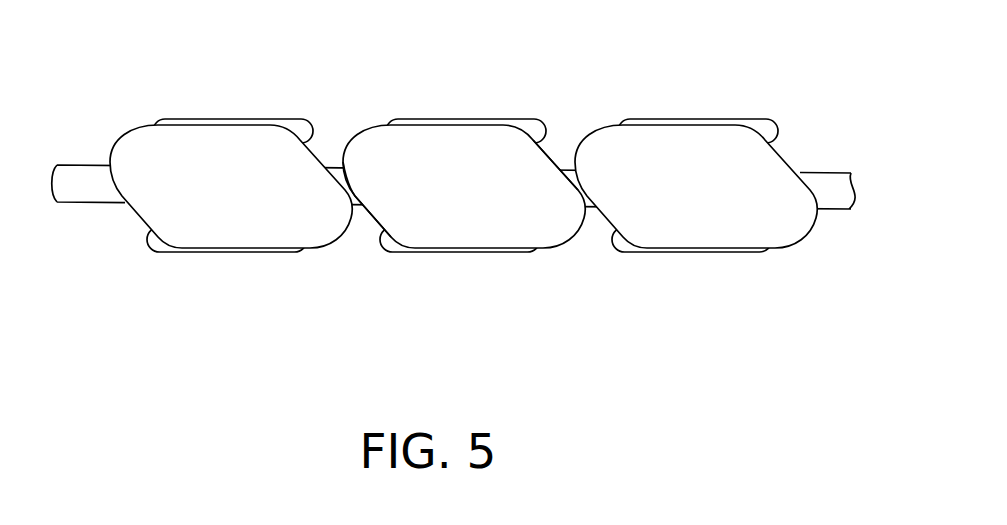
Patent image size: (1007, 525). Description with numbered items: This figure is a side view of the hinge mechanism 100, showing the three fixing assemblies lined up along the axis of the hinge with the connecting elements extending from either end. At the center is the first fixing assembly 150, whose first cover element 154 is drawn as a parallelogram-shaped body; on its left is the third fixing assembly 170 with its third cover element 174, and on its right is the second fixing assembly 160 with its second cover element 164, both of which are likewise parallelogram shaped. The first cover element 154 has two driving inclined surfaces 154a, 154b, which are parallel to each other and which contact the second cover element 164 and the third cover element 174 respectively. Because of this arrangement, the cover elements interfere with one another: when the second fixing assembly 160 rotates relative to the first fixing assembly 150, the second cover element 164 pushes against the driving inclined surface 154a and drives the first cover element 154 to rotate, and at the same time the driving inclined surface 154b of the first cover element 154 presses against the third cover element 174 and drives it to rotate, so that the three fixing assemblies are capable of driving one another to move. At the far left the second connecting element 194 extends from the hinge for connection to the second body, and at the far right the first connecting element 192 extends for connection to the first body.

The hinge mechanism 100 is at (457, 216).
The first fixing assembly 150 is at (464, 237).
The first cover element 154 is at (403, 240).
The driving inclined surface 154a is at (552, 157).
The driving inclined surface 154b is at (347, 192).
The second fixing assembly 160 is at (696, 240).
The second cover element 164 is at (633, 240).
The third fixing assembly 170 is at (231, 237).
The third cover element 174 is at (170, 240).
The first connecting element 192 is at (832, 190).
The second connecting element 194 is at (90, 183).